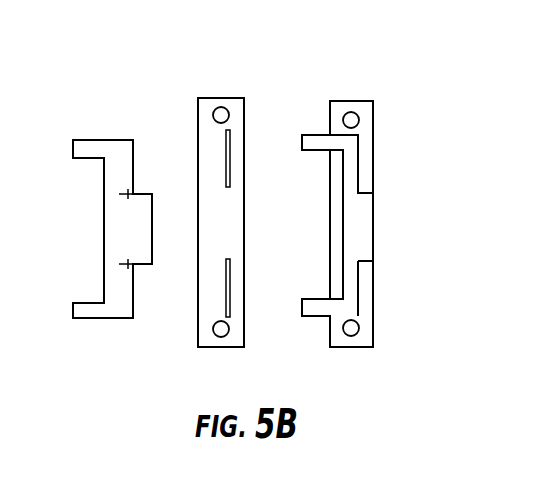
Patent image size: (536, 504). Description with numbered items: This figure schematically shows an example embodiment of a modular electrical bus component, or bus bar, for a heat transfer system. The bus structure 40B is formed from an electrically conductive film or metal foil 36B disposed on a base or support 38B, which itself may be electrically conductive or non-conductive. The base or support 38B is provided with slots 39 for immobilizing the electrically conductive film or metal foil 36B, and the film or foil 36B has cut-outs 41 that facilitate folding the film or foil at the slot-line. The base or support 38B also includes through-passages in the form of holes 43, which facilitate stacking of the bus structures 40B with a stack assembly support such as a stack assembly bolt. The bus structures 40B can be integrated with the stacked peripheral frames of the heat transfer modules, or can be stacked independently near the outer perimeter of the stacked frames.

The electrically conductive film or metal foil 36B is at (103, 140).
The base or support 38B is at (239, 98).
The slots 39 is at (228, 163).
The bus structure 40B is at (373, 101).
The cut-outs 41 is at (128, 196).
The holes 43 is at (222, 107).